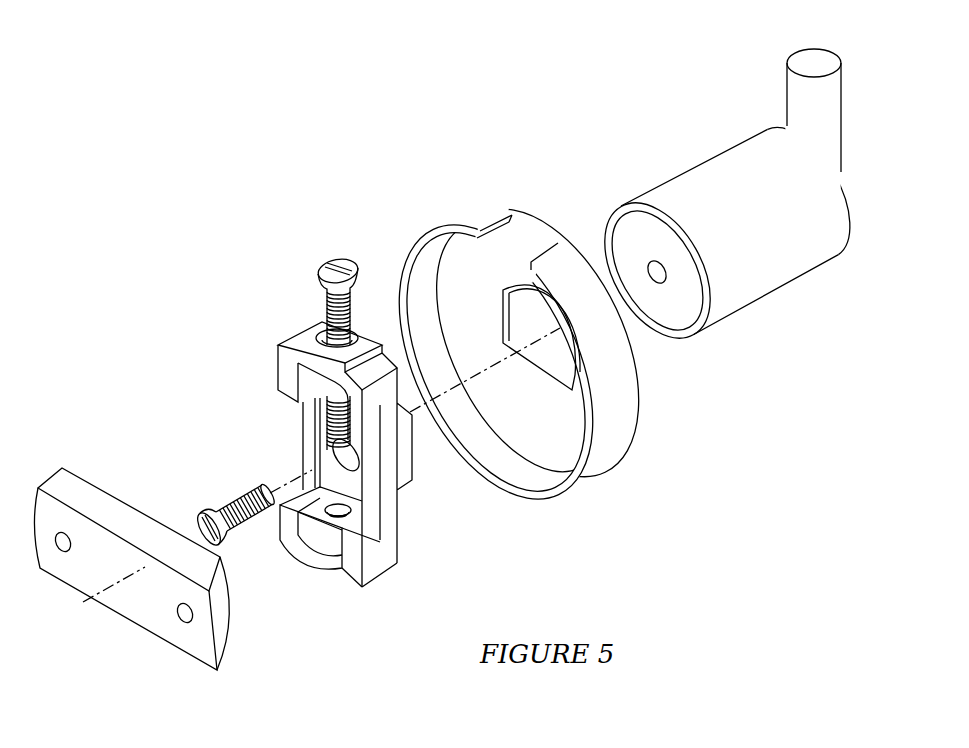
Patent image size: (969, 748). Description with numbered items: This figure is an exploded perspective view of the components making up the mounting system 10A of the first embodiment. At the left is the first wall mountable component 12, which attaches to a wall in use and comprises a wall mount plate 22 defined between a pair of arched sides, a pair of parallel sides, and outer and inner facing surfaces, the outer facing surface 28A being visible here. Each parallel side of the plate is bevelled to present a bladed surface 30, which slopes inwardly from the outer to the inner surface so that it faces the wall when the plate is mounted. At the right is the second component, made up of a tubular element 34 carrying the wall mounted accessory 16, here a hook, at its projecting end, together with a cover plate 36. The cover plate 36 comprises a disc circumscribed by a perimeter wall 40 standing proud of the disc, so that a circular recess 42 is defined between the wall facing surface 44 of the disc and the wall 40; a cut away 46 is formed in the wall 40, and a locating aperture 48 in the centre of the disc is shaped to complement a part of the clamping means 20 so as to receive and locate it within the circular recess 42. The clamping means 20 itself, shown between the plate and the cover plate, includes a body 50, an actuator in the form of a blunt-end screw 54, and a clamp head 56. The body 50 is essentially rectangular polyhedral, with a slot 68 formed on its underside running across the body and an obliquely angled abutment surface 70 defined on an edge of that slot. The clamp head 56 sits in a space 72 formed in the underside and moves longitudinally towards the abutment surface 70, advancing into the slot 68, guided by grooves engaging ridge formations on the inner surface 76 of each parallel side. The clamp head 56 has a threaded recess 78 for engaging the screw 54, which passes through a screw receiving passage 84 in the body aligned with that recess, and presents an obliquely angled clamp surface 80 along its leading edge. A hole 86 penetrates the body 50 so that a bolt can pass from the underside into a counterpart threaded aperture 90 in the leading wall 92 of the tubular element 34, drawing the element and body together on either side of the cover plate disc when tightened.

The mounting system 10A is at (457, 182).
The first wall mountable component 12 is at (80, 460).
The wall mounted accessory 16 is at (810, 103).
The clamping means 20 is at (289, 319).
The wall mount plate 22 is at (137, 603).
The outer facing surface 28A is at (83, 574).
The bladed surface 30 is at (140, 530).
The tubular element 34 is at (722, 172).
The cover plate 36 is at (608, 438).
The perimeter wall 40 is at (524, 467).
The circular recess 42 is at (570, 424).
The wall facing surface 44 is at (455, 265).
The cut away 46 is at (531, 236).
The locating aperture 48 is at (567, 362).
The body 50 is at (350, 572).
The blunt-end screw 54 is at (328, 270).
The clamp head 56 is at (316, 545).
The slot 68 is at (268, 397).
The abutment surface 70 is at (308, 397).
The space 72 is at (336, 560).
The inner surface 76 is at (315, 457).
The threaded recess 78 is at (353, 523).
The clamp surface 80 is at (355, 535).
The screw receiving passage 84 is at (353, 330).
The hole 86 is at (358, 478).
The threaded aperture 90 is at (666, 279).
The leading wall 92 is at (637, 232).